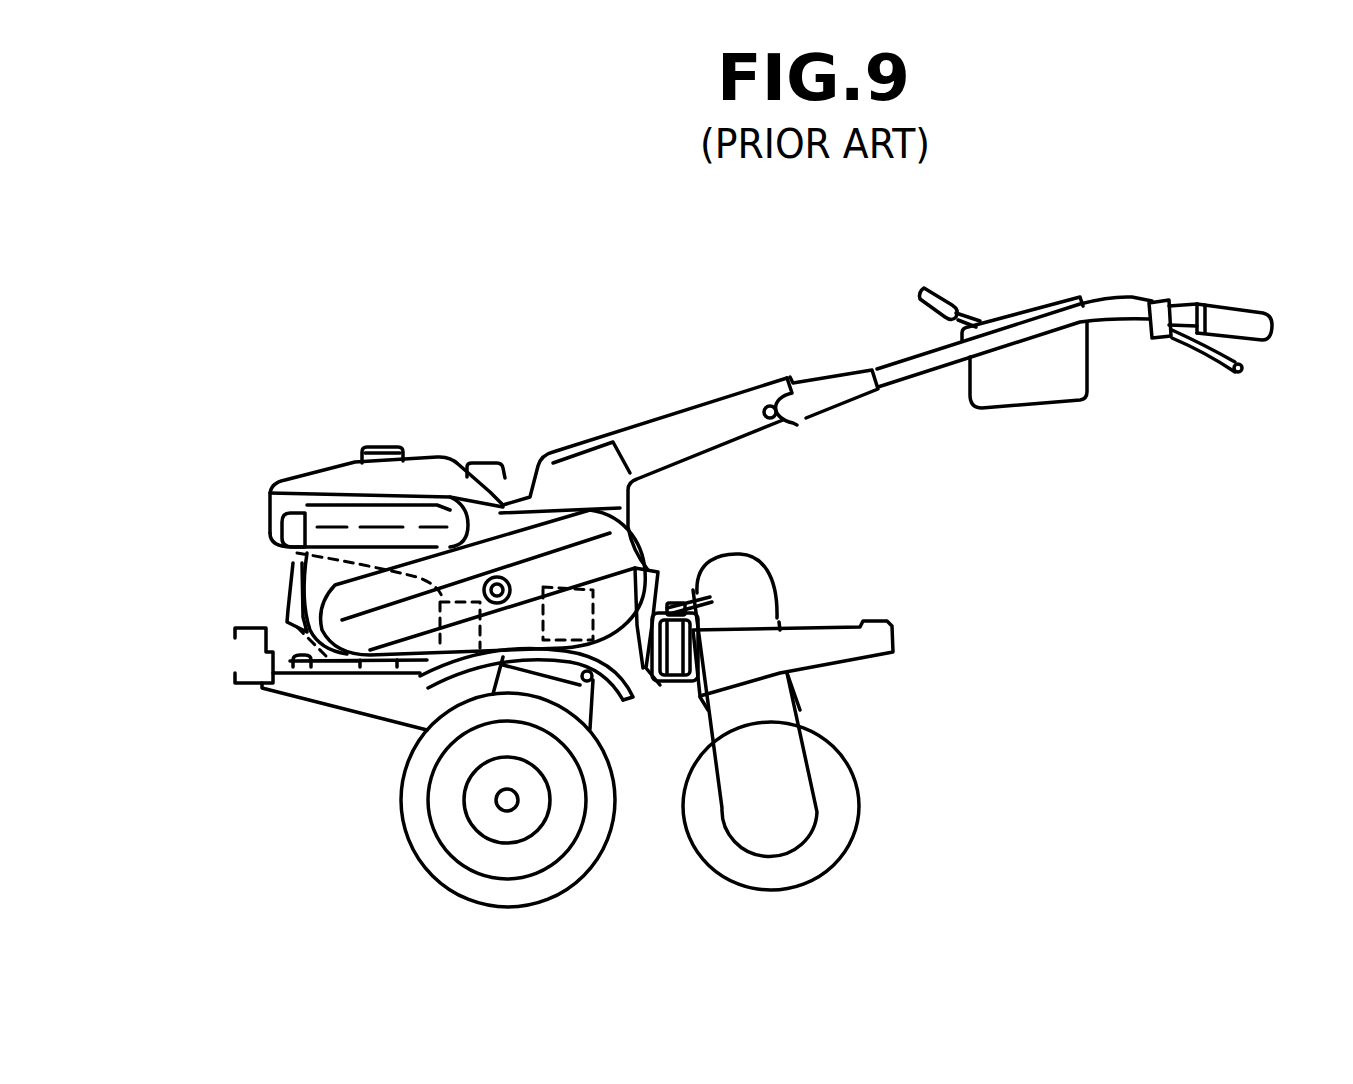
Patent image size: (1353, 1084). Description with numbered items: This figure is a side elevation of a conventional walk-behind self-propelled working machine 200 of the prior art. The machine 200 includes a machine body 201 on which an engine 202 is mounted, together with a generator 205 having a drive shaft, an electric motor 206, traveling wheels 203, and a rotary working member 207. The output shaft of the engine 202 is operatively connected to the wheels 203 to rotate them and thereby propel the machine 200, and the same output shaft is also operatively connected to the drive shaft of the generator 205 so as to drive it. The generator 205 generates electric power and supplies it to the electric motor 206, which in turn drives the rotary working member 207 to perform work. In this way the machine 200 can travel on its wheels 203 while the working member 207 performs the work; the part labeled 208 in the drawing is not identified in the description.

The working machine 200 is at (464, 308).
The machine body 201 is at (660, 607).
The engine 202 is at (292, 605).
The traveling wheels 203 is at (433, 858).
The generator 205 is at (457, 607).
The electric motor 206 is at (583, 613).
The rotary working member 207 is at (846, 810).
The frame 208 is at (337, 653).